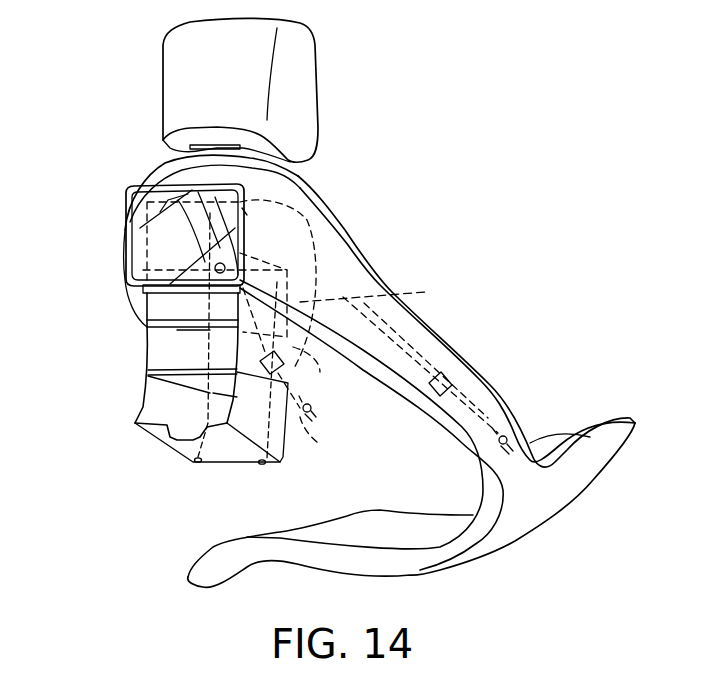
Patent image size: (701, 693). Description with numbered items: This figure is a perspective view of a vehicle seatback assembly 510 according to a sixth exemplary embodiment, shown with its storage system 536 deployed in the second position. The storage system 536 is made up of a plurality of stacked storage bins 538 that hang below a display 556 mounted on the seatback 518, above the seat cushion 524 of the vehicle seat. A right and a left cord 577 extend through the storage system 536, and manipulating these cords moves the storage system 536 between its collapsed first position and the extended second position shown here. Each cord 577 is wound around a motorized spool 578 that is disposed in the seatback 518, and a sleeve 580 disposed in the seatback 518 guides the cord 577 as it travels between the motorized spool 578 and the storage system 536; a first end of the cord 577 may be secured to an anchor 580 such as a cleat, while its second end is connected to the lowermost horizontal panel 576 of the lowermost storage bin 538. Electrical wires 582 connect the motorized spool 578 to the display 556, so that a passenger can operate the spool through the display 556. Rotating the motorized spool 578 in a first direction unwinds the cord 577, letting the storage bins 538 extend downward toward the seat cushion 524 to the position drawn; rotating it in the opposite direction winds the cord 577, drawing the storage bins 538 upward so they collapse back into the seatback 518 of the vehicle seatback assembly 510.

The vehicle seatback assembly 510 is at (492, 216).
The seatback 518 is at (489, 368).
The seat cushion 524 is at (305, 458).
The storage system 536 is at (139, 391).
The storage bin 538 is at (133, 413).
The display 556 is at (126, 208).
The lowermost horizontal panel 576 is at (223, 447).
The cord 577 is at (342, 247).
The motorized spool 578 is at (417, 405).
The sleeve 580 is at (317, 442).
The electrical wires 582 is at (225, 350).